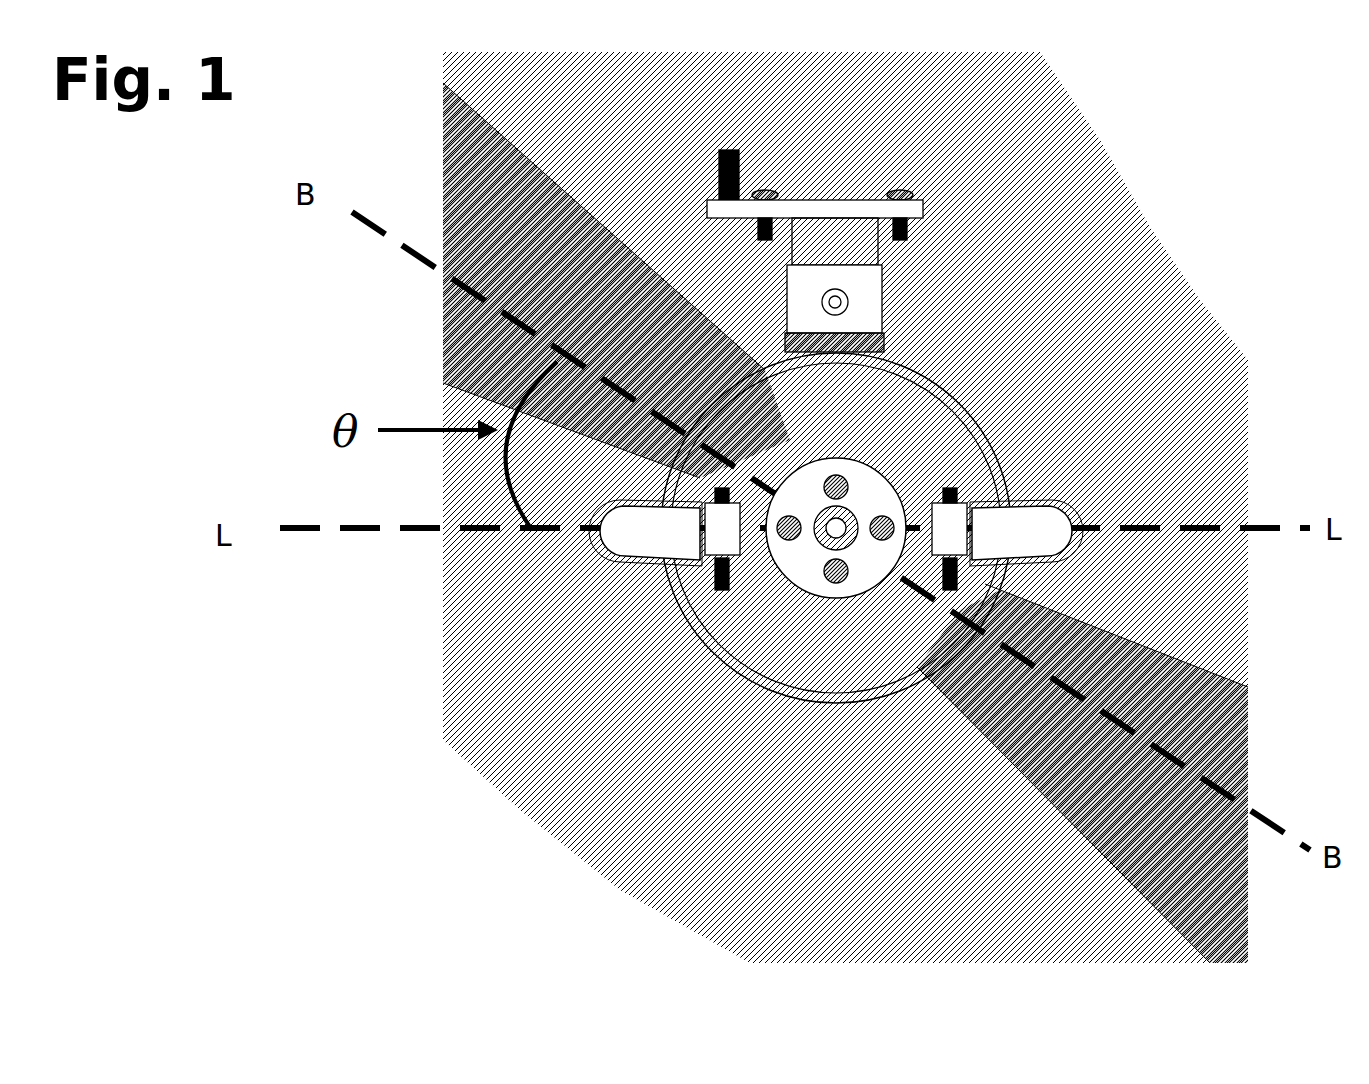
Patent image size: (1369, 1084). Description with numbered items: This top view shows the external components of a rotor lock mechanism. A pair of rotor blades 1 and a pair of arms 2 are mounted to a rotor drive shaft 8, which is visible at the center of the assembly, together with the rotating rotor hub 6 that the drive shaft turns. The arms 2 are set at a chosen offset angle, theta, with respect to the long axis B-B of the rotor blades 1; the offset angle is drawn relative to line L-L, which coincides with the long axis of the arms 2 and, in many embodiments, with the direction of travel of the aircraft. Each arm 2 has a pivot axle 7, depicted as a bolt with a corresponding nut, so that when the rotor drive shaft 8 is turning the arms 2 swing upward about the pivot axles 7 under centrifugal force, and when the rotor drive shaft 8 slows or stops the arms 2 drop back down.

The rotor blades 1 is at (527, 210).
The arms 2 is at (622, 542).
The rotor hub 6 is at (773, 647).
The pivot axle 7 is at (717, 578).
The rotor drive shaft 8 is at (847, 513).